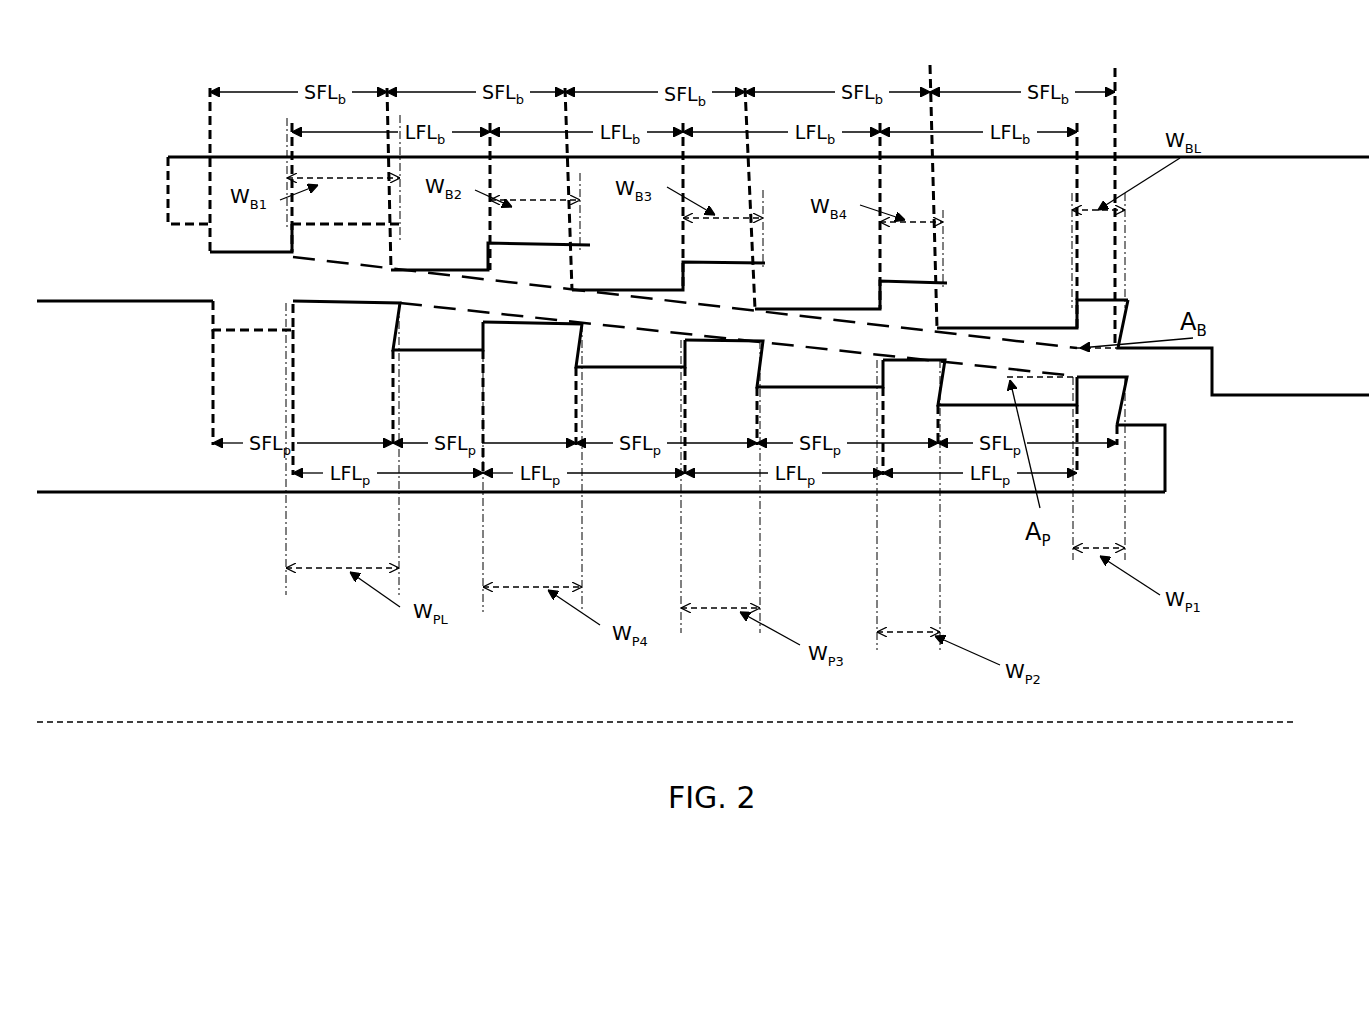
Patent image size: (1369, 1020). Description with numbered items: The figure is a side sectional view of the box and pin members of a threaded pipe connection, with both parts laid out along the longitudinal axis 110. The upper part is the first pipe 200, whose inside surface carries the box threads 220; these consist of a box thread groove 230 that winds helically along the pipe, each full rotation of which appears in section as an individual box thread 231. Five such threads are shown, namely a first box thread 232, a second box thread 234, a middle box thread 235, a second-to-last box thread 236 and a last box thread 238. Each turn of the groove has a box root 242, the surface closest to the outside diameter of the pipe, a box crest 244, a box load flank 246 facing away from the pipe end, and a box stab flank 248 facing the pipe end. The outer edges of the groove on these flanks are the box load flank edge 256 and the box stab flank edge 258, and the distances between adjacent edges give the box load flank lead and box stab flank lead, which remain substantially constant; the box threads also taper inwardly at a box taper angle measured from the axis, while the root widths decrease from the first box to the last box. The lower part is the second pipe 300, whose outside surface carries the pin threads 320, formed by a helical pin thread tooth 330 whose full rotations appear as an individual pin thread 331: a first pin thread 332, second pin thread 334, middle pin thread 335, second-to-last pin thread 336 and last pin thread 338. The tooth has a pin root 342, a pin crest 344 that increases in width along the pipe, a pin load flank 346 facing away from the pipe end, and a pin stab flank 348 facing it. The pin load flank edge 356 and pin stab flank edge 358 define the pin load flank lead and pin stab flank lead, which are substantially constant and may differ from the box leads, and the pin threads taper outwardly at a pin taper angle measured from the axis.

The longitudinal axis 110 is at (400, 722).
The first pipe 200 is at (768, 276).
The box threads 220 is at (170, 237).
The box thread groove 230 is at (287, 227).
The individual box thread 231 is at (400, 227).
The first box thread 232 is at (273, 187).
The second box thread 234 is at (488, 179).
The middle box thread 235 is at (665, 189).
The second-to-last box thread 236 is at (846, 198).
The last box thread 238 is at (1029, 206).
The box root 242 is at (903, 282).
The box crest 244 is at (978, 324).
The box load flank 246 is at (877, 291).
The box stab flank 248 is at (938, 316).
The box load flank edge 256 is at (680, 288).
The box stab flank edge 258 is at (758, 313).
The second pipe 300 is at (601, 396).
The pin threads 320 is at (1160, 405).
The pin thread tooth 330 is at (290, 300).
The individual pin thread 331 is at (1063, 393).
The first pin thread 332 is at (1102, 401).
The second pin thread 334 is at (980, 382).
The middle pin thread 335 is at (784, 363).
The second-to-last pin thread 336 is at (584, 344).
The last pin thread 338 is at (388, 325).
The pin root 342 is at (423, 345).
The pin crest 344 is at (549, 320).
The pin load flank 346 is at (479, 327).
The pin stab flank 348 is at (580, 332).
The pin load flank edge 356 is at (757, 393).
The pin stab flank edge 358 is at (683, 373).